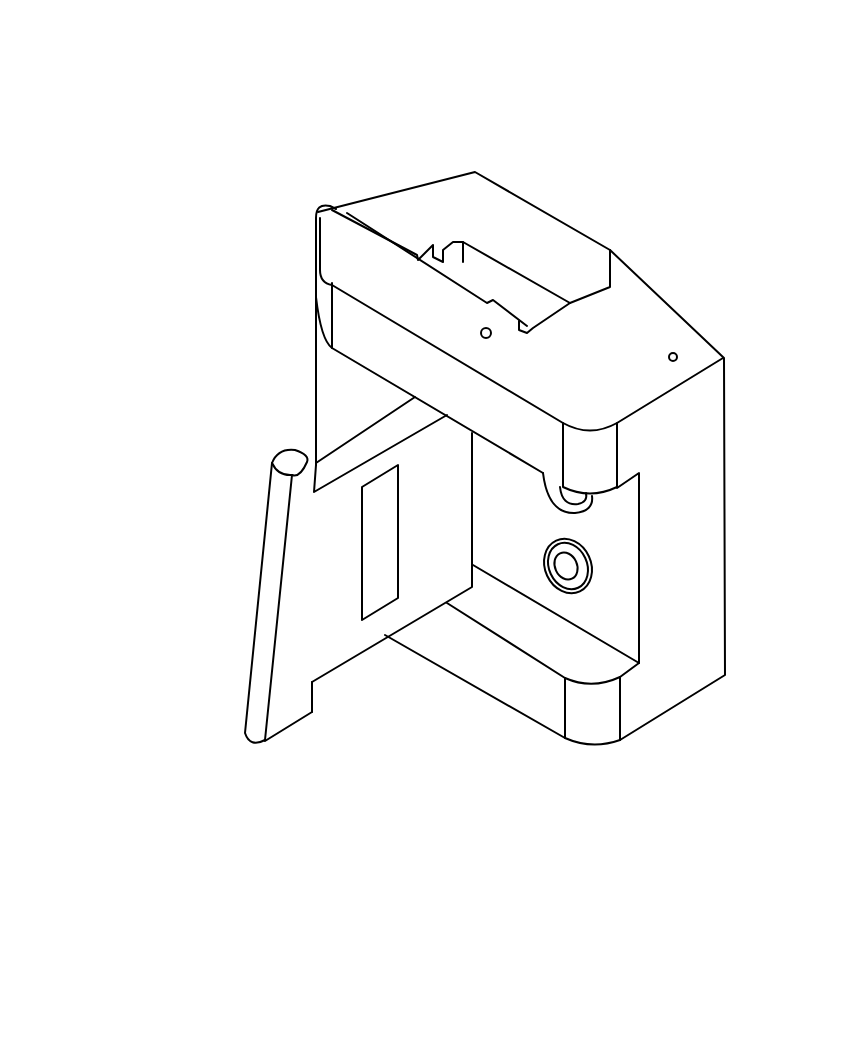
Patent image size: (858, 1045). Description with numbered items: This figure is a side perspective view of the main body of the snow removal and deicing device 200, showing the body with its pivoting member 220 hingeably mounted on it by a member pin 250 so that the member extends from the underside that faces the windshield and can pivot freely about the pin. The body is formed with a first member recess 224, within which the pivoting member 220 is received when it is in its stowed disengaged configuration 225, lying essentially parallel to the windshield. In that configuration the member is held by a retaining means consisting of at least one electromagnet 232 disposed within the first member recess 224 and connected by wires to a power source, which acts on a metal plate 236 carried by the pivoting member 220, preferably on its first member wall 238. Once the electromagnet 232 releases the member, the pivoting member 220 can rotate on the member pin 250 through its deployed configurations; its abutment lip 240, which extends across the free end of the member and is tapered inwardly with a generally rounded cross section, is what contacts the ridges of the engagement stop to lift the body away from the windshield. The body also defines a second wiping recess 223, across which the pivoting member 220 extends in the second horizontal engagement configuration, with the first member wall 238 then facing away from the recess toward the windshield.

The latch device 200 is at (747, 173).
The pivoting member 220 is at (283, 713).
The second wiping recess 223 is at (332, 348).
The first member recess 224 is at (612, 668).
The stowed disengaged configuration 225 is at (313, 428).
The electromagnet 232 is at (583, 510).
The metal plate 236 is at (387, 541).
The first member wall 238 is at (337, 670).
The abutment lip 240 is at (263, 577).
The member pin 250 is at (488, 328).